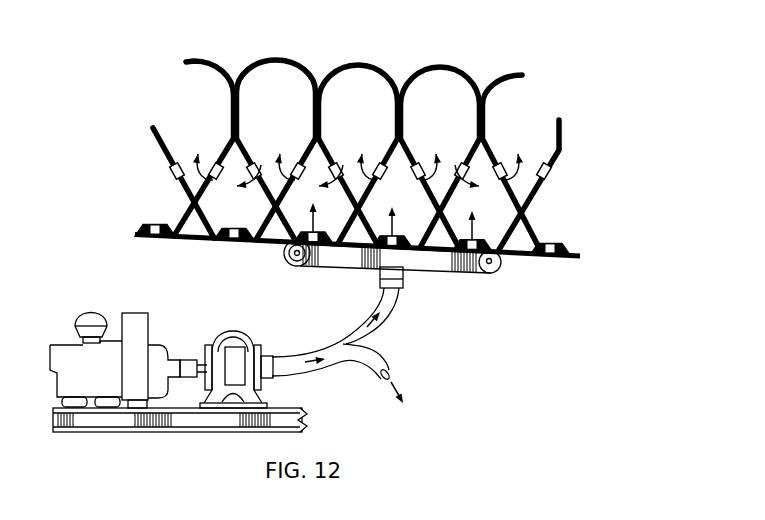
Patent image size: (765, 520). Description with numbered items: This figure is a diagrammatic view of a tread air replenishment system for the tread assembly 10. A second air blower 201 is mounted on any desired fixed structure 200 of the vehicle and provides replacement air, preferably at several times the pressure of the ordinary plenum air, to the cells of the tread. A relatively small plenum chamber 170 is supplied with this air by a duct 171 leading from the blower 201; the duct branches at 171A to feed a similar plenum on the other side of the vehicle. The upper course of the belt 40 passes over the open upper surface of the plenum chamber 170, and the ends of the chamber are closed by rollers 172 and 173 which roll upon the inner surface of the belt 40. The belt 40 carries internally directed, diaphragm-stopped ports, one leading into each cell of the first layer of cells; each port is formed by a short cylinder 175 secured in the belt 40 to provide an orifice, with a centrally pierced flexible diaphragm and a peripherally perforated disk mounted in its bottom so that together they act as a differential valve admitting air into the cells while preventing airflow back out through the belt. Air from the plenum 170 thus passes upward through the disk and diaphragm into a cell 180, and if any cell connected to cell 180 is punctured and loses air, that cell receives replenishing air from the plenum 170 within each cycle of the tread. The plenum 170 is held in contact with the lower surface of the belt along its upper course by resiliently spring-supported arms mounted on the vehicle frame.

The netting / loop arrangement 10 is at (289, 55).
The belt 40 is at (197, 242).
The plenum chamber 170 is at (440, 270).
The duct 171 is at (375, 314).
The branch of duct 171A is at (392, 366).
The roller 172 is at (284, 253).
The roller 173 is at (502, 265).
The short cylinder 175 is at (397, 229).
The cell 180 is at (397, 166).
The fixed structure 200 is at (125, 432).
The second air blower 201 is at (232, 331).